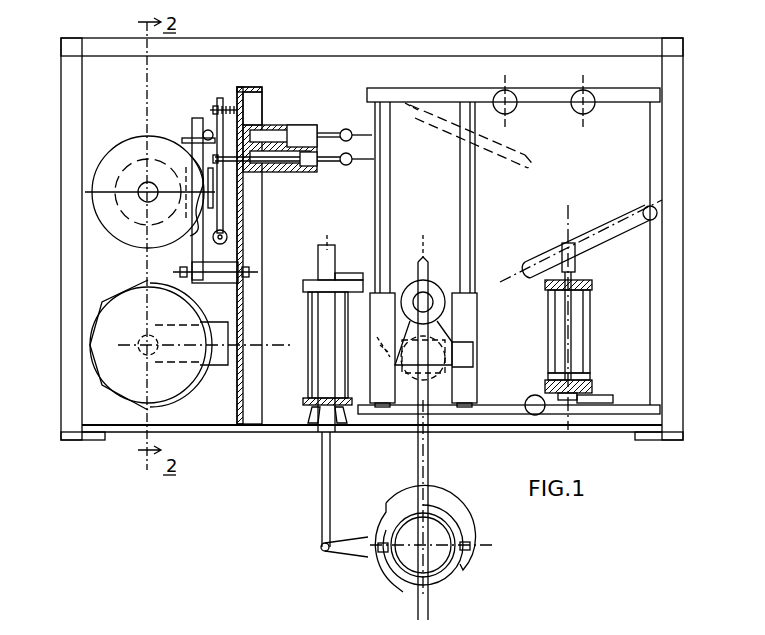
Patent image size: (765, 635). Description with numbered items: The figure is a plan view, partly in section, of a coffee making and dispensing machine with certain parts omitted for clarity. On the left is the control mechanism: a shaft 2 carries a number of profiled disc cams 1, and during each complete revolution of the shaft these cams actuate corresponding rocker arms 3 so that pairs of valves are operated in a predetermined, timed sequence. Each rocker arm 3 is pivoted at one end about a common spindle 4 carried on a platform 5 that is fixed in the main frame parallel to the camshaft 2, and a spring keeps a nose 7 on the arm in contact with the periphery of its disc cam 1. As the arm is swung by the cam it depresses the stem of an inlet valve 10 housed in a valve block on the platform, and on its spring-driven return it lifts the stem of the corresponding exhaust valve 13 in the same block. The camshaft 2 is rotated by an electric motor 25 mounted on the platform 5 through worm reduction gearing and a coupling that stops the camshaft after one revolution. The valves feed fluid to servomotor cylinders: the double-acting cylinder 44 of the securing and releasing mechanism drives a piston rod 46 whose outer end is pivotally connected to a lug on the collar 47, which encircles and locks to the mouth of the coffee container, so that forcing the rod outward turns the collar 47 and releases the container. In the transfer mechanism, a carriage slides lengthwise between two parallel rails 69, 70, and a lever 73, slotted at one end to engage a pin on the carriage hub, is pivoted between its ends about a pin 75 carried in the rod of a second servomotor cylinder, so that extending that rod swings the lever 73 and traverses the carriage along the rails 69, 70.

The disc cam 1 is at (100, 212).
The shaft 2 is at (140, 190).
The rocker arm 3 is at (222, 180).
The common spindle 4 is at (227, 239).
The platform 5 is at (244, 430).
The nose 7 is at (210, 195).
The inlet valve 10 is at (293, 170).
The exhaust valve 13 is at (302, 126).
The electric motor 25 is at (120, 382).
The double-acting servomotor cylinder 44 is at (310, 318).
The piston rod 46 is at (320, 478).
The collar 47 is at (388, 578).
The rail 69 is at (390, 215).
The rail 70 is at (458, 210).
The lever 73 is at (517, 153).
The pin 75 is at (655, 212).